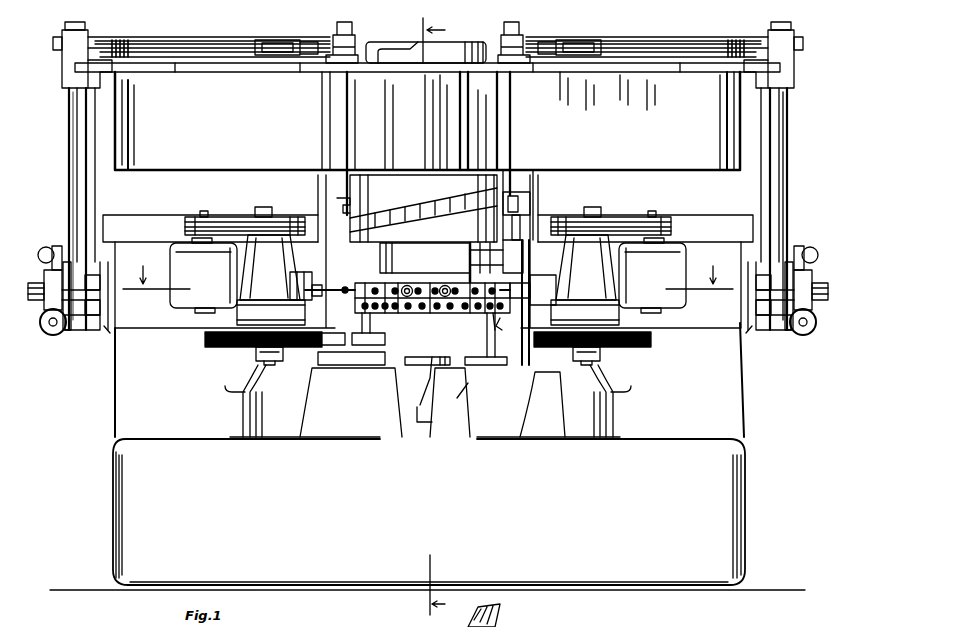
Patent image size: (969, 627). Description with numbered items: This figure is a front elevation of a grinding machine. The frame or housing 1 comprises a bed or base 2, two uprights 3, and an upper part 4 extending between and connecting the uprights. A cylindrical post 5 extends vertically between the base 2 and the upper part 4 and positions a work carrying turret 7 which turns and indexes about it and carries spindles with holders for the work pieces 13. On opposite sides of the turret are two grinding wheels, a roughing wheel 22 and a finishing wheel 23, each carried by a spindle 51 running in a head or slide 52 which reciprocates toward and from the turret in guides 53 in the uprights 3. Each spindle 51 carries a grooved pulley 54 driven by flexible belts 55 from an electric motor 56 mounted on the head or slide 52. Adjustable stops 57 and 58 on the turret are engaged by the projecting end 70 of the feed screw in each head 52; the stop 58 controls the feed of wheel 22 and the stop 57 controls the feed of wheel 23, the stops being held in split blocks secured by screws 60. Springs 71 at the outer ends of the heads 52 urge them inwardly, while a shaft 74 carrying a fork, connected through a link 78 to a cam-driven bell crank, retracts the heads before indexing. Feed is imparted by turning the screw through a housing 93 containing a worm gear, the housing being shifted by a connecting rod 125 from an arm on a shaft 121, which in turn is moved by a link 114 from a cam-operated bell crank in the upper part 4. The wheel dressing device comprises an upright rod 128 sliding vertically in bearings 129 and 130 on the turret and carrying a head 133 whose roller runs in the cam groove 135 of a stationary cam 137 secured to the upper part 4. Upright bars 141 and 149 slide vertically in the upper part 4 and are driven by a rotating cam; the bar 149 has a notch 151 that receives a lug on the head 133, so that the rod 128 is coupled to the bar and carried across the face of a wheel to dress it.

The frame or housing 1 is at (105, 430).
The bed or base 2 is at (660, 578).
The uprights 3 is at (115, 386).
The upper part 4 is at (172, 165).
The cylindrical post 5 is at (428, 269).
The work carrying turret 7 is at (458, 322).
The work pieces 13 is at (348, 338).
The roughing grinding wheel 22 is at (636, 347).
The finishing grinding wheel 23 is at (210, 347).
The spindle 51 is at (262, 207).
The head or slide 52 is at (152, 322).
The guides 53 is at (134, 212).
The grooved pulley 54 is at (288, 215).
The flexible belts 55 is at (230, 215).
The electric motor 56 is at (411, 275).
The adjustable stop 57 is at (348, 286).
The adjustable stop 58 is at (495, 326).
The screws 60 is at (420, 330).
The end portion of feed screw 70 is at (324, 286).
The springs 71 is at (108, 330).
The shaft 74 is at (72, 180).
The link 78 is at (218, 38).
The housing 93 is at (50, 300).
The link 114 is at (222, 66).
The shaft 121 is at (86, 152).
The connecting rod 125 is at (46, 246).
The upright rod or bar 128 is at (508, 360).
The bearing 129 is at (541, 390).
The bearing 130 is at (503, 258).
The head 133 is at (530, 208).
The cam groove 135 is at (412, 214).
The stationary cam 137 is at (423, 208).
The upright bar 141 is at (526, 174).
The upright bar 149 is at (323, 172).
The notch or recess 151 is at (335, 203).